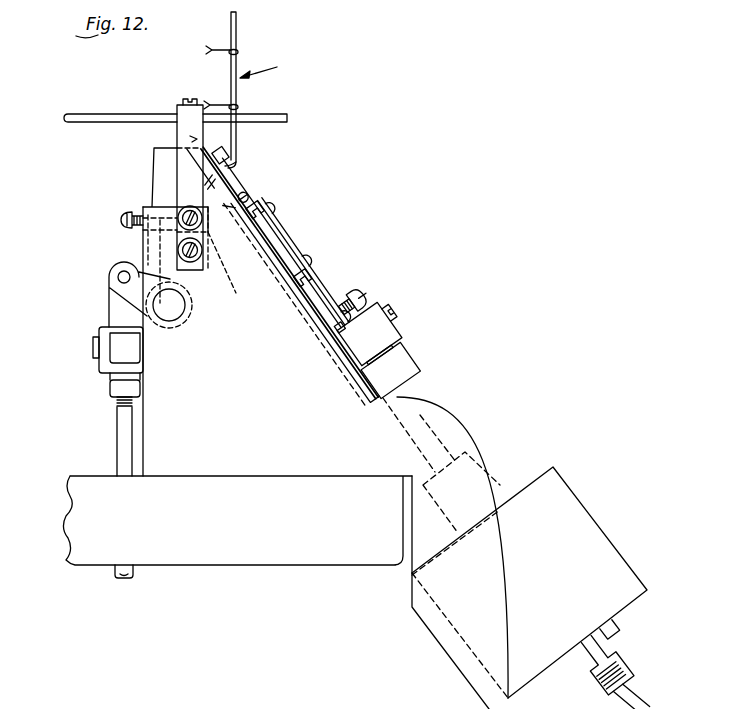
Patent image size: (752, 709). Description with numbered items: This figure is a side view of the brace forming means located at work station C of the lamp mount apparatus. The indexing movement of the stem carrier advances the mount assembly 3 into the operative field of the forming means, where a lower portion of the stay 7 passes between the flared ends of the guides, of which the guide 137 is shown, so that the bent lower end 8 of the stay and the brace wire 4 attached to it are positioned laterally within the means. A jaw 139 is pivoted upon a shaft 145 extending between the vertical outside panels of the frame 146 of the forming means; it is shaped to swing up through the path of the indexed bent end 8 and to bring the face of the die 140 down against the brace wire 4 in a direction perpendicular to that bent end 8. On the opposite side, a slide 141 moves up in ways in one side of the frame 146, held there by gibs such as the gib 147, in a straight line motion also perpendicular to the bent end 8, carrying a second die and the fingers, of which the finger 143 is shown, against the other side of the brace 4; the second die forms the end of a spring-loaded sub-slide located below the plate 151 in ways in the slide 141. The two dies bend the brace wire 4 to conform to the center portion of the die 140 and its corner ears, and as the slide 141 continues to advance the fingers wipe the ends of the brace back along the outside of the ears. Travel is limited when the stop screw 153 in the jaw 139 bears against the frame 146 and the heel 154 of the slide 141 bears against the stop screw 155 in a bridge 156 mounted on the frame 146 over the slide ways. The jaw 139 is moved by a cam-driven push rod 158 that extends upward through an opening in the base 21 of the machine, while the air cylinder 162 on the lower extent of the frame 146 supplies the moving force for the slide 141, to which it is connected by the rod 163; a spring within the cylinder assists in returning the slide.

The mount assembly 3 is at (265, 69).
The brace wire 4 is at (190, 139).
The stay 7 is at (238, 33).
The bent lower end 8 is at (238, 164).
The base 21 is at (100, 478).
The guide 137 is at (93, 116).
The jaw 139 is at (157, 174).
The die 140 is at (224, 157).
The slide 141 is at (281, 243).
The finger 143 is at (240, 184).
The shaft 145 is at (172, 321).
The frame 146 is at (142, 413).
The gib 147 is at (267, 233).
The plate 151 is at (323, 281).
The stop screw 153 is at (122, 227).
The heel 154 is at (419, 363).
The stop screw 155 is at (368, 296).
The bridge 156 is at (401, 333).
The push rod 158 is at (118, 405).
The air cylinder 162 is at (594, 528).
The rod 163 is at (440, 402).